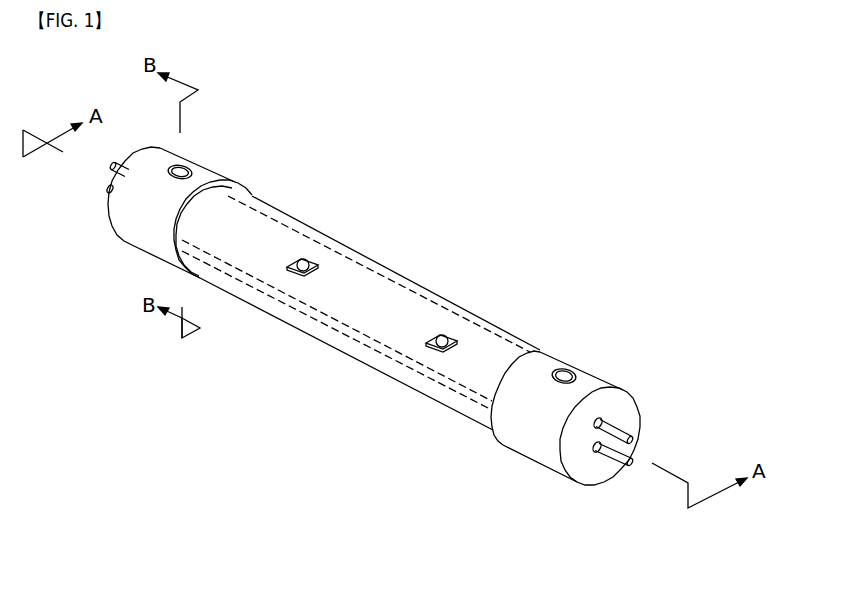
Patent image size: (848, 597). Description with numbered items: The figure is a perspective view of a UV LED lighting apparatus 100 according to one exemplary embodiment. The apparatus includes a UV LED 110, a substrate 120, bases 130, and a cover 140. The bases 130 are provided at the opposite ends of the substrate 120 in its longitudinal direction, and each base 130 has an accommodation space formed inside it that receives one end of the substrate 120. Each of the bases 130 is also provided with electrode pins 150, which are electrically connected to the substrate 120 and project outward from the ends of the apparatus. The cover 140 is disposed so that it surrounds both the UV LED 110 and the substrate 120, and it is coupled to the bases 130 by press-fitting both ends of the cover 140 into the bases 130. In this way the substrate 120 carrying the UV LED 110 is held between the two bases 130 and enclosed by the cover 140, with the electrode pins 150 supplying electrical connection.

The UV LED lighting apparatus 100 is at (352, 150).
The UV LED 110 is at (449, 335).
The substrate 120 is at (365, 281).
The base 130 is at (197, 158).
The cover 140 is at (378, 368).
The electrode pin 150 is at (110, 167).